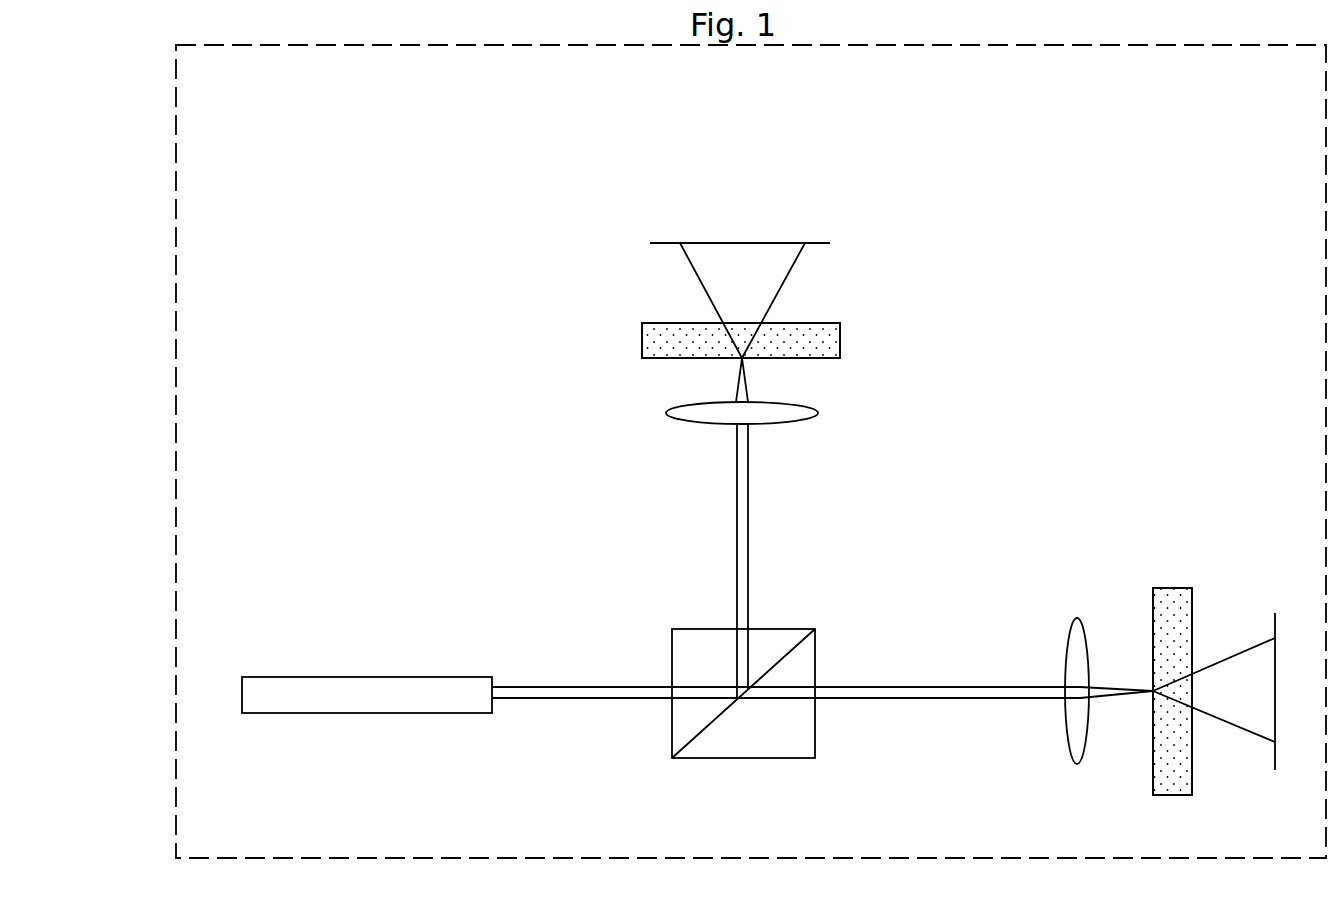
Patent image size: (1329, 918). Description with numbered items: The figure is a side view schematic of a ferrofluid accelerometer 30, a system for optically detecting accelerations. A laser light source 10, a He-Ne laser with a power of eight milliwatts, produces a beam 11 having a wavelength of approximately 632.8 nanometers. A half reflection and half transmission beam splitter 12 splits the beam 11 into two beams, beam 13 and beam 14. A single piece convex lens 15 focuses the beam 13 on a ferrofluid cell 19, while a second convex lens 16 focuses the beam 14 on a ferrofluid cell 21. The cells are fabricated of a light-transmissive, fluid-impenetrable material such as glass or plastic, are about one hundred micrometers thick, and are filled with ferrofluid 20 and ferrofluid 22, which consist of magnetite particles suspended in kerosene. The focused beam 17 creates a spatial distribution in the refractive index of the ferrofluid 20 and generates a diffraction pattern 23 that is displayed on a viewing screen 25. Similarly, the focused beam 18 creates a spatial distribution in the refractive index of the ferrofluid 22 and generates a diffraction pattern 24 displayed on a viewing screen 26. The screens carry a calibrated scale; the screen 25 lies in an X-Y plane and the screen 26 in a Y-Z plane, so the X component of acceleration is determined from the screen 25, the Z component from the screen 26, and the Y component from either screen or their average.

The laser light source 10 is at (458, 707).
The beam 11 is at (579, 650).
The beam splitter 12 is at (739, 726).
The beam 13 is at (947, 742).
The beam 14 is at (811, 561).
The convex lens 15 is at (1044, 662).
The convex lens 16 is at (808, 409).
The focused beam 17 is at (1122, 608).
The focused beam 18 is at (832, 380).
The ferrofluid cell 19 is at (1195, 671).
The ferrofluid 20 is at (1212, 701).
The ferrofluid cell 21 is at (795, 338).
The ferrofluid 22 is at (697, 313).
The diffraction pattern 23 is at (1214, 674).
The diffraction pattern 24 is at (807, 300).
The viewing screen 25 is at (1282, 628).
The viewing screen 26 is at (789, 222).
The ferrofluid accelerometer 30 is at (751, 451).